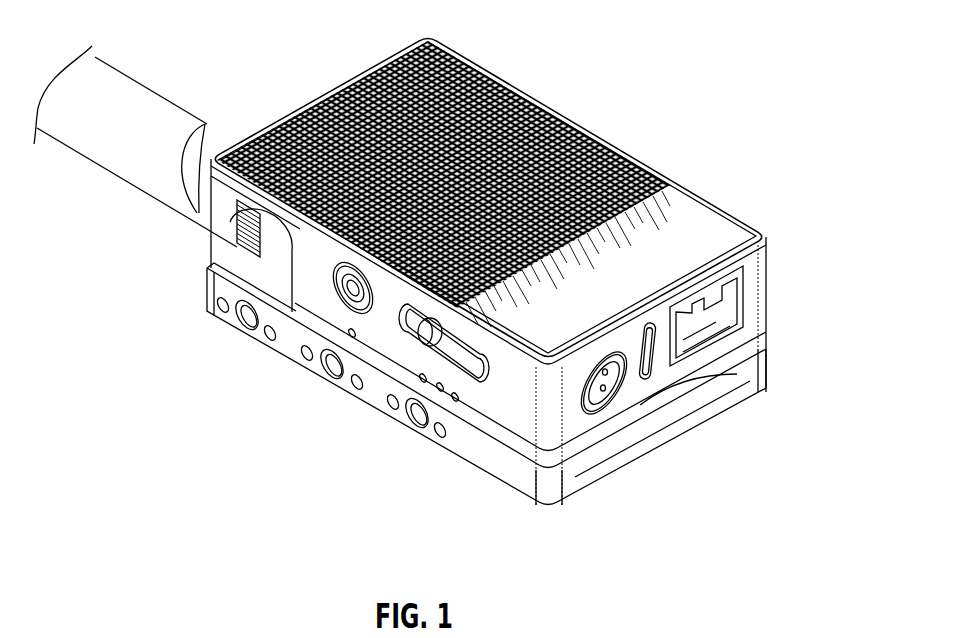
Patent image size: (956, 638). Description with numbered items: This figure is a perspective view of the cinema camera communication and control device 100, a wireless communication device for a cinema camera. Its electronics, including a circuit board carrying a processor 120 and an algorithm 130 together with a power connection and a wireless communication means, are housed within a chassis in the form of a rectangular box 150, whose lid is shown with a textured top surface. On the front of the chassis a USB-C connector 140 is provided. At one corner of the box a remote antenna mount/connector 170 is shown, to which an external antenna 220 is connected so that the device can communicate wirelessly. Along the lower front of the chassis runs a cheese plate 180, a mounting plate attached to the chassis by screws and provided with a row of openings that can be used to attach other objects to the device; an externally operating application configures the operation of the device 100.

The cinema camera communication and control device 100 is at (760, 28).
The processor 120 is at (724, 172).
The algorithm 130 is at (192, 410).
The USB-C connector 140 is at (647, 379).
The chassis in the form of a rectangular box 150 is at (486, 72).
The remote antenna mount/connector 170 is at (233, 214).
The cheese plate 180 is at (374, 406).
The external antenna 220 is at (206, 128).